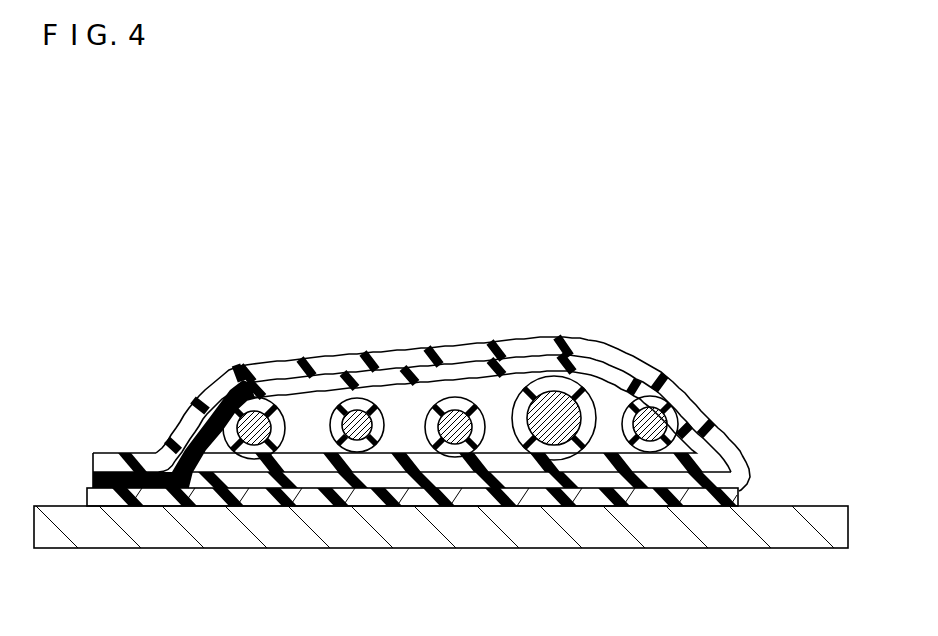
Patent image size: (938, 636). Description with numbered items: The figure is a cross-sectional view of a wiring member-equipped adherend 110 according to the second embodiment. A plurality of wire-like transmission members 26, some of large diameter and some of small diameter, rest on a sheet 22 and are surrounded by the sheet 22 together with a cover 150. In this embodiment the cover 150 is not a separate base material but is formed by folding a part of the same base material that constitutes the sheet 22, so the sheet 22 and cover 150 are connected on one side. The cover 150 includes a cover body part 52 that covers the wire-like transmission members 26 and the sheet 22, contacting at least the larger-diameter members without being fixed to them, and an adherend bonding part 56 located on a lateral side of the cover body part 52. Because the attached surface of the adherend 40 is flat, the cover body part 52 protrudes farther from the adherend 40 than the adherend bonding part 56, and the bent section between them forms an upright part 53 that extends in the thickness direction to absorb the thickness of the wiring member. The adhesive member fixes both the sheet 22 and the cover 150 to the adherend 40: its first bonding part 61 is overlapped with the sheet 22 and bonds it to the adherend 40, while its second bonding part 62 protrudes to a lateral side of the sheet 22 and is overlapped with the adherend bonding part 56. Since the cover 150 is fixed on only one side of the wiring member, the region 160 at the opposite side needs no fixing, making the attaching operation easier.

The wiring member-equipped adherend 110 is at (198, 228).
The wire-like transmission member 26 is at (275, 403).
The cover 150 is at (460, 353).
The cover body part 52 is at (533, 340).
The upright part 53 is at (195, 408).
The adherend bonding part 56 is at (123, 457).
The sheet end corner portion 160 is at (752, 495).
The second bonding part 62 is at (147, 497).
The sheet 22 is at (388, 480).
The first bonding part 61 is at (510, 497).
The adherend 40 is at (607, 548).